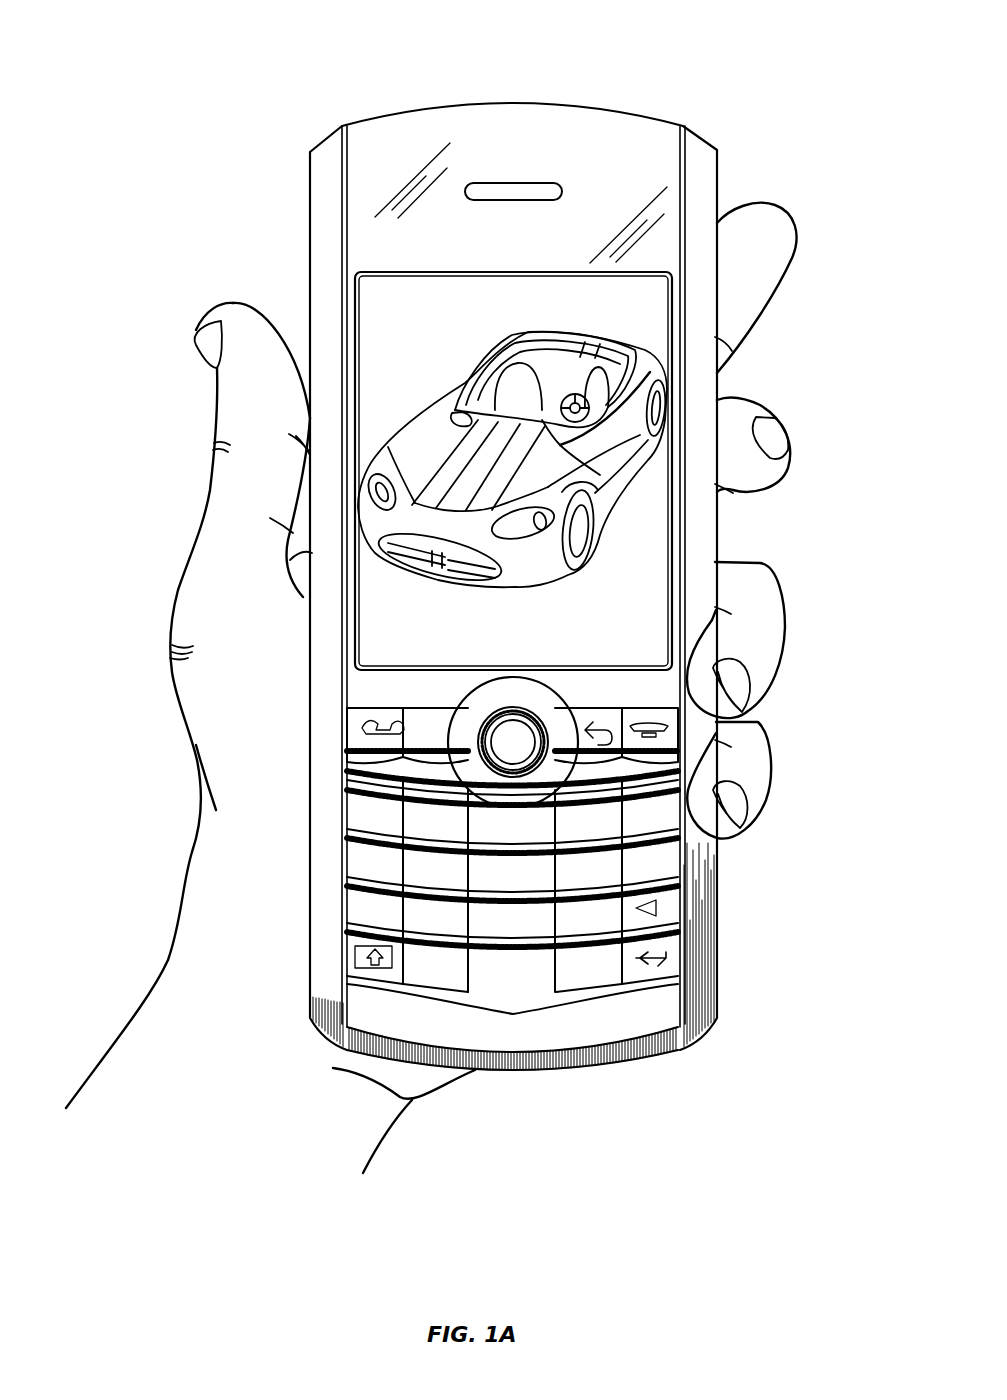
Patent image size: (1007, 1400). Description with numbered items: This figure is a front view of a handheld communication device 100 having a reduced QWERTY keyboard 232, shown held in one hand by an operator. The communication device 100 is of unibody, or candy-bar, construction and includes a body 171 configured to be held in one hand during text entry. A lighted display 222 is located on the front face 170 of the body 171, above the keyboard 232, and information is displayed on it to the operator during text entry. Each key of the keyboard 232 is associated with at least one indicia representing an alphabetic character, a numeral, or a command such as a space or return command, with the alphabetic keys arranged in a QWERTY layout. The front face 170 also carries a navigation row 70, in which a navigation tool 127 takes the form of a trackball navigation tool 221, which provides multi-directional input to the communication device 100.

The communication device 100 is at (667, 36).
The front face 170 is at (702, 190).
The body 171 is at (303, 155).
The display 222 is at (386, 320).
The navigation row 70 is at (333, 703).
The trackball navigation tool 221 is at (513, 739).
The navigation tool 127 is at (552, 768).
The keyboard 232 is at (527, 1021).